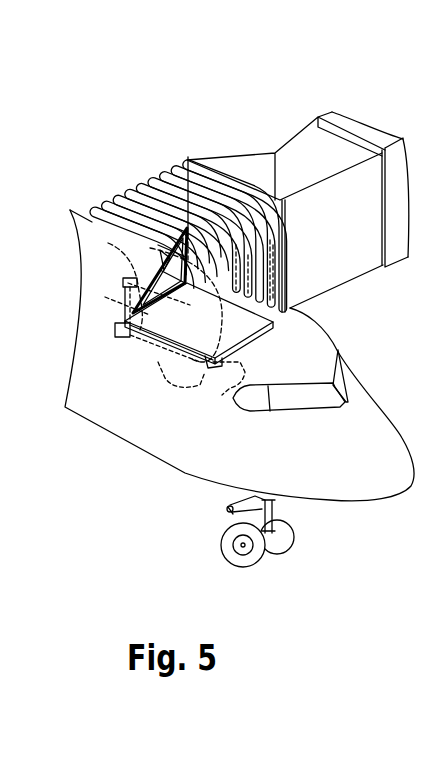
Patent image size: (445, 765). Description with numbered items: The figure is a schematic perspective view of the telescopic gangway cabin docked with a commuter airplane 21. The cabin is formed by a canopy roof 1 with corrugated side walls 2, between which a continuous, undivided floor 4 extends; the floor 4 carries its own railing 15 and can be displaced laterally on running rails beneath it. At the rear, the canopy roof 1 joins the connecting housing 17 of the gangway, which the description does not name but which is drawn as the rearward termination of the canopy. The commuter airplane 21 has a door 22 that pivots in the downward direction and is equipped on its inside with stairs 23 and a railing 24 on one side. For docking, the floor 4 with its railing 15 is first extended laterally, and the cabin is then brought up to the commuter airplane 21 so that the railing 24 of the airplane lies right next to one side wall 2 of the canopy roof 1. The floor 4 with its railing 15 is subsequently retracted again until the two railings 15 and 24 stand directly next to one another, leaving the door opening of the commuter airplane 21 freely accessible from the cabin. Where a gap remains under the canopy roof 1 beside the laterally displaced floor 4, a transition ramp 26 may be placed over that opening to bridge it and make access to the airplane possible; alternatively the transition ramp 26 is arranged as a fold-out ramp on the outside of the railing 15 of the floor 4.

The canopy roof 1 is at (217, 188).
The side walls 2 is at (108, 243).
The floor 4 is at (240, 324).
The railing 15 is at (148, 272).
The connecting duct housing 17 is at (370, 100).
The commuter airplane 21 is at (203, 460).
The door 22 is at (167, 387).
The stairs 23 is at (220, 392).
The railing 24 is at (123, 295).
The transition ramp 26 is at (273, 235).